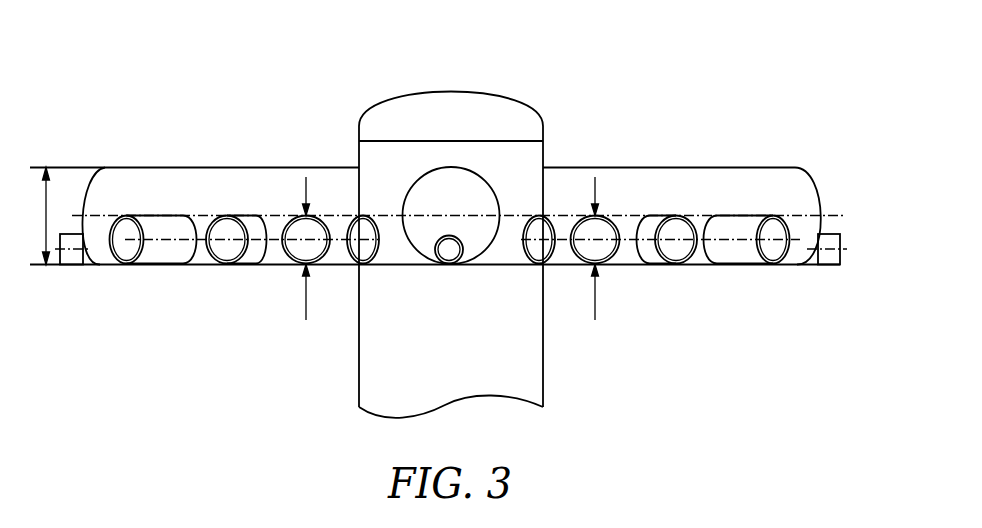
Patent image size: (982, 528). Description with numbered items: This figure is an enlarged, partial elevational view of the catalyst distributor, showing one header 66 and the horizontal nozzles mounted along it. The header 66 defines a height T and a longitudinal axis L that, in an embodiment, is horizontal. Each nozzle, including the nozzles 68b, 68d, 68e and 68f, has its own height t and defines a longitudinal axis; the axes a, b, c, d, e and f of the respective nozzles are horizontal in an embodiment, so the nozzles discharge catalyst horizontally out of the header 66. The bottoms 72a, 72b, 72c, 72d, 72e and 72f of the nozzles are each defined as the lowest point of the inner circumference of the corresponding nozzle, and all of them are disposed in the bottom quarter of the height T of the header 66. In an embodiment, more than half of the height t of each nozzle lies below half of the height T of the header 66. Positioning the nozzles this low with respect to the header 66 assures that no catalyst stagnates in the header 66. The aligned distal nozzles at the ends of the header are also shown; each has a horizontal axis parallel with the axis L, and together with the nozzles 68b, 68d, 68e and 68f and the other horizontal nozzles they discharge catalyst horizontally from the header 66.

The header 66 is at (462, 180).
The longitudinal axis of the header L is at (457, 215).
The height of the header T is at (35, 216).
The height of the nozzle t is at (442, 248).
The bottom of the nozzle 72a is at (125, 260).
The bottom of the nozzle 72b is at (230, 260).
The bottom of the nozzle 72c is at (773, 262).
The bottom of the nozzle 72d is at (680, 260).
The bottom of the nozzle 72e is at (590, 258).
The bottom of the nozzle 72f is at (303, 262).
The nozzle 68b is at (250, 255).
The nozzle 68d is at (653, 257).
The nozzle 68e is at (597, 247).
The nozzle 68f is at (310, 252).
The longitudinal axis a is at (150, 238).
The longitudinal axis b is at (250, 240).
The longitudinal axis c is at (743, 242).
The longitudinal axis d is at (663, 242).
The longitudinal axis e is at (595, 240).
The longitudinal axis f is at (306, 239).